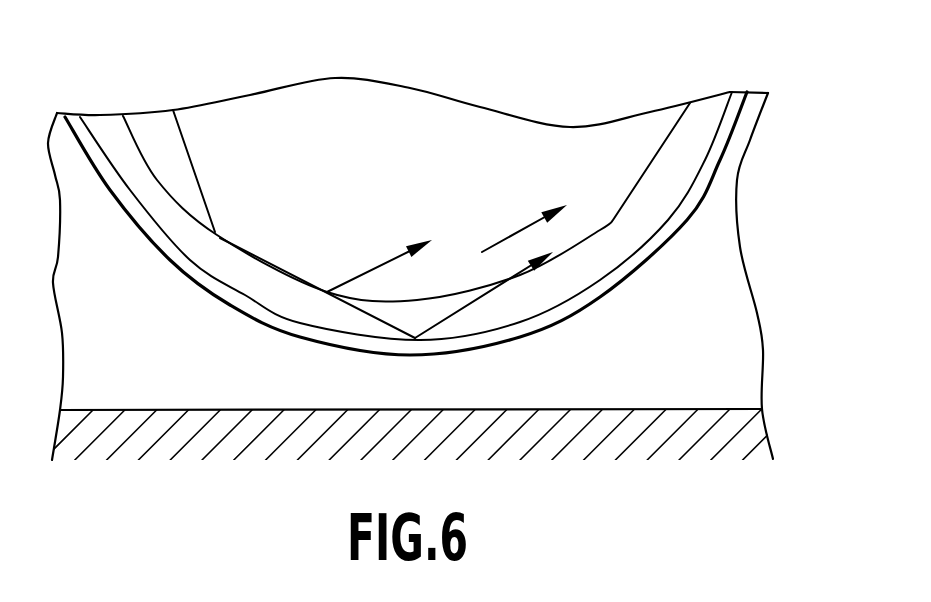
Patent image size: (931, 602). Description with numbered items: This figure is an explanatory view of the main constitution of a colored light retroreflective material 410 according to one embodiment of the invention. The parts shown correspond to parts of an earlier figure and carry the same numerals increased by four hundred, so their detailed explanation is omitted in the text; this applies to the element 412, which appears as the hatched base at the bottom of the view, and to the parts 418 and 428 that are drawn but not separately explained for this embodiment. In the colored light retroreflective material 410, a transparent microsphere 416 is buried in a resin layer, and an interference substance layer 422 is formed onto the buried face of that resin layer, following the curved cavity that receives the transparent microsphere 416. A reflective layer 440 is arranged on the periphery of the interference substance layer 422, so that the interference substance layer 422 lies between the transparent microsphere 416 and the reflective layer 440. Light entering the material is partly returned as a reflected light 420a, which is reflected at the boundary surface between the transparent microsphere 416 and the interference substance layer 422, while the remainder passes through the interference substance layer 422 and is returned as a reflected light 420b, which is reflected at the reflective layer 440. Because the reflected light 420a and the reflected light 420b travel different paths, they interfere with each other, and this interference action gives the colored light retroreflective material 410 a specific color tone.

The colored light retroreflective material 410 is at (577, 92).
The substrate 412 is at (612, 503).
The transparent microsphere 416 is at (428, 115).
The edge of reflector opening 418 is at (192, 157).
The reflected light 420a is at (380, 262).
The reflected light 420b is at (437, 327).
The interference substance layer 422 is at (668, 165).
The light ray 428 is at (522, 230).
The reflective layer 440 is at (702, 197).